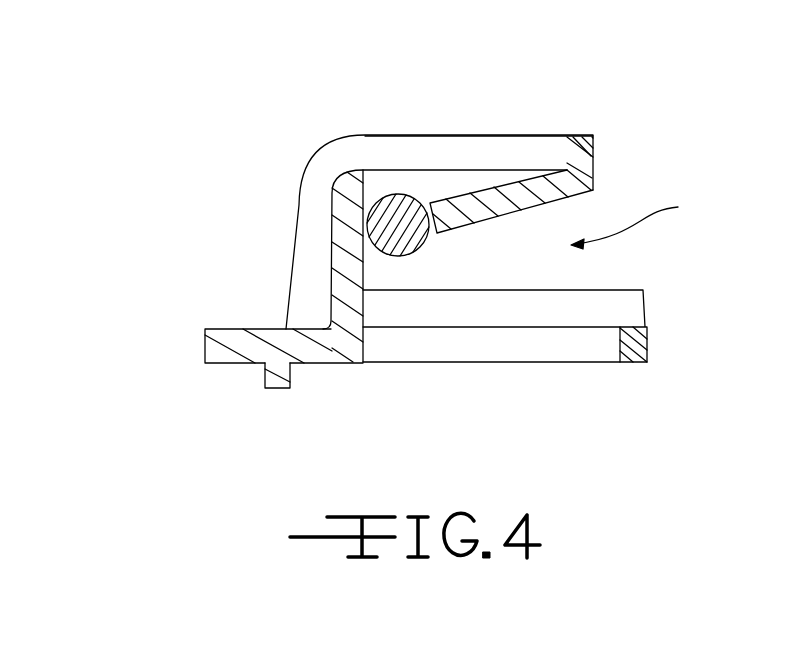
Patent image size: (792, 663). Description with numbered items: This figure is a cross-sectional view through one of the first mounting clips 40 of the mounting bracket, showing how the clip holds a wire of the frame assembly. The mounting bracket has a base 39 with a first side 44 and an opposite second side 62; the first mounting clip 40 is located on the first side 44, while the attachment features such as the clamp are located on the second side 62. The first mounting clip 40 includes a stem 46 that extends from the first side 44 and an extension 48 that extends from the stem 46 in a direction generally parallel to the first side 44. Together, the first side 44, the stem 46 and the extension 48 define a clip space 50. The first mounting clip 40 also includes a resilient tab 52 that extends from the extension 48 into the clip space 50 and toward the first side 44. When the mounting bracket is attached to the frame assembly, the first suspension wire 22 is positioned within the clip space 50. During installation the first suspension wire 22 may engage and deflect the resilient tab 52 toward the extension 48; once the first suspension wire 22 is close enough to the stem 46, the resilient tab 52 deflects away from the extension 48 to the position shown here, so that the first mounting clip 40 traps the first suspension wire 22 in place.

The first mounting clip 40 is at (333, 142).
The extension 48 is at (475, 150).
The stem 46 is at (327, 300).
The first side 44 is at (240, 328).
The second side 62 is at (232, 365).
The first suspension wire 22 is at (401, 257).
The resilient tab 52 is at (465, 203).
The clip space 50 is at (645, 219).
The base 39 is at (648, 343).